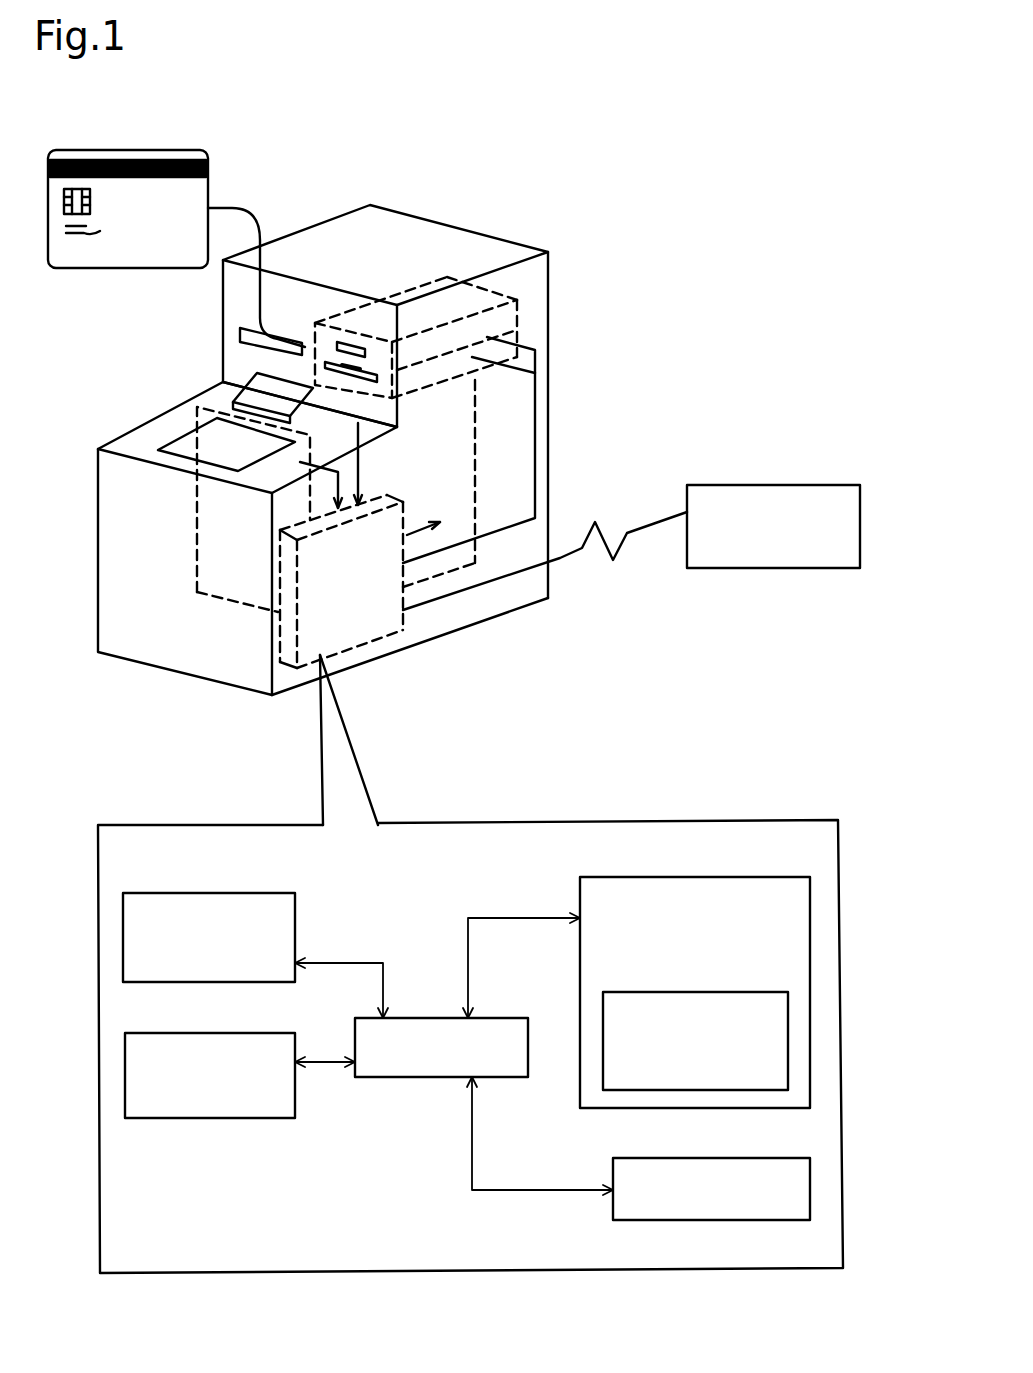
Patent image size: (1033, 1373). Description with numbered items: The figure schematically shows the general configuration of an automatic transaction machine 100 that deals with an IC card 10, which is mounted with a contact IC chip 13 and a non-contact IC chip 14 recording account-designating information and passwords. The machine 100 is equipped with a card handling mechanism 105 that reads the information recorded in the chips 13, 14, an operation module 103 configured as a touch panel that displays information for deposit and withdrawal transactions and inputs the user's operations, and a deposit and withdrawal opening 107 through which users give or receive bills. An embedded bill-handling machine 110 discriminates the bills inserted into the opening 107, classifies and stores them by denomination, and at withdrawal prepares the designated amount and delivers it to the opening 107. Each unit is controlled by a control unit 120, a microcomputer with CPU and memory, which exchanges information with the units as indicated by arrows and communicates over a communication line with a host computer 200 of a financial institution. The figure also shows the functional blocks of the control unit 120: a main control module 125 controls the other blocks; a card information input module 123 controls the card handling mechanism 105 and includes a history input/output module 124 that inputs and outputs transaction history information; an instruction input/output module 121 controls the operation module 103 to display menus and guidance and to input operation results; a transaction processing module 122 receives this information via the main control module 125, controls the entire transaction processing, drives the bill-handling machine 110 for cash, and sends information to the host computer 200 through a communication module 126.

The IC card 10 is at (216, 180).
The contact IC chip 13 is at (91, 204).
The non-contact IC chip 14 is at (100, 231).
The automatic transaction machine 100 is at (541, 217).
The operation module 103 is at (170, 448).
The card handling mechanism 105 is at (530, 303).
The deposit and withdrawal opening 107 is at (222, 390).
The bill-handling machine 110 is at (478, 473).
The control unit 120 is at (367, 648).
The instruction input/output module 121 is at (183, 893).
The transaction processing module 122 is at (210, 1033).
The card information input module 123 is at (713, 877).
The history input/output module 124 is at (710, 992).
The main control module 125 is at (418, 1018).
The communication module 126 is at (725, 1158).
The host computer 200 is at (747, 485).